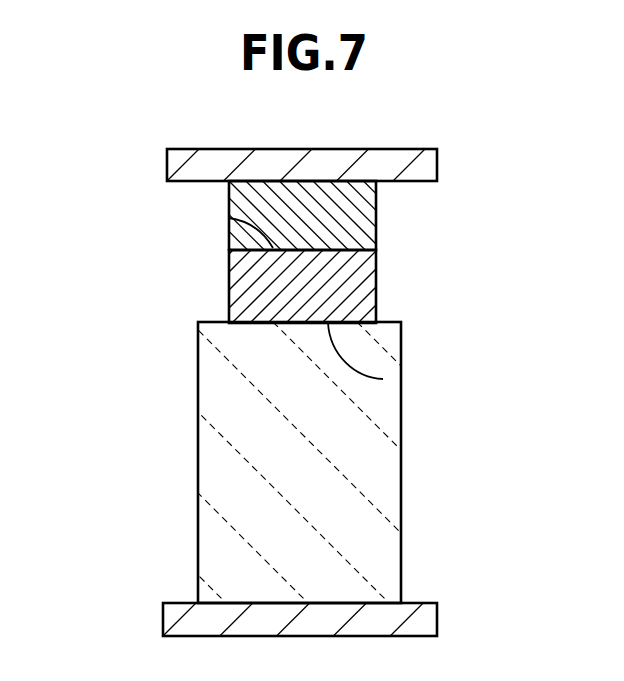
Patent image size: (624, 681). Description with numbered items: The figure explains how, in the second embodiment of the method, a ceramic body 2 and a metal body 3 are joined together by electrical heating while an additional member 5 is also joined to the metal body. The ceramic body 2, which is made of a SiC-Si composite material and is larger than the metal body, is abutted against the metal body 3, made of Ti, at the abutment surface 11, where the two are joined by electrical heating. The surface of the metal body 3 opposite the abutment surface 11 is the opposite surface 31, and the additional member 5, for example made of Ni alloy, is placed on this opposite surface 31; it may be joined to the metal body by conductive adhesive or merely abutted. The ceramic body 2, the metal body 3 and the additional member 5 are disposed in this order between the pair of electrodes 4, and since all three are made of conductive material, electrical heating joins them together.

The electrodes 4 is at (395, 163).
The additional member 5 is at (347, 212).
The metal body 3 is at (337, 278).
The opposite surface 31 is at (229, 217).
The abutment surface 11 is at (383, 379).
The ceramic body 2 is at (242, 482).